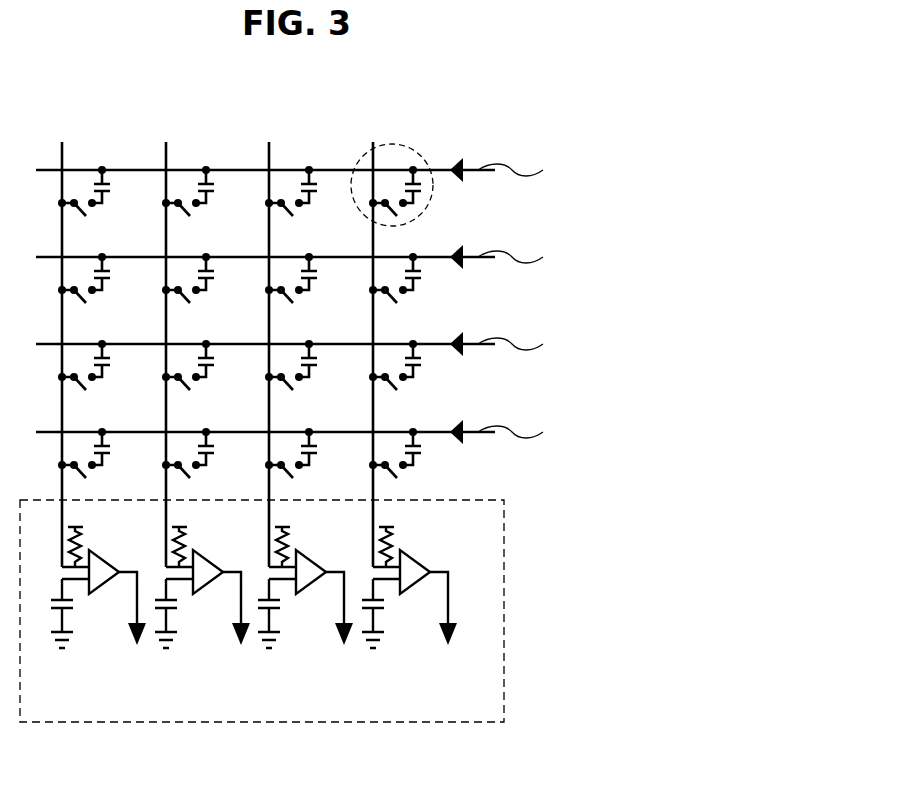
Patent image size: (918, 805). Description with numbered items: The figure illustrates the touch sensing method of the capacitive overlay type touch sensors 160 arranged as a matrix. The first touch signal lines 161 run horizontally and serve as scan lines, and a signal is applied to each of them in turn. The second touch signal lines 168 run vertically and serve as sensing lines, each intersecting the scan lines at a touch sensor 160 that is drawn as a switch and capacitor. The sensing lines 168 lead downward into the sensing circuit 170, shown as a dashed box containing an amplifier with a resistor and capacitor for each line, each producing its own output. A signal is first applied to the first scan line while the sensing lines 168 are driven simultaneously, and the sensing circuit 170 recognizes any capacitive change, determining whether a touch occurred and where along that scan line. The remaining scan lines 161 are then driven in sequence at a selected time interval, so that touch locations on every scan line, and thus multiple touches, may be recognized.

The touch sensor 160 is at (412, 147).
The first touch signal lines 161 is at (596, 152).
The second touch signal lines 168 is at (372, 157).
The sensing circuit 170 is at (504, 633).